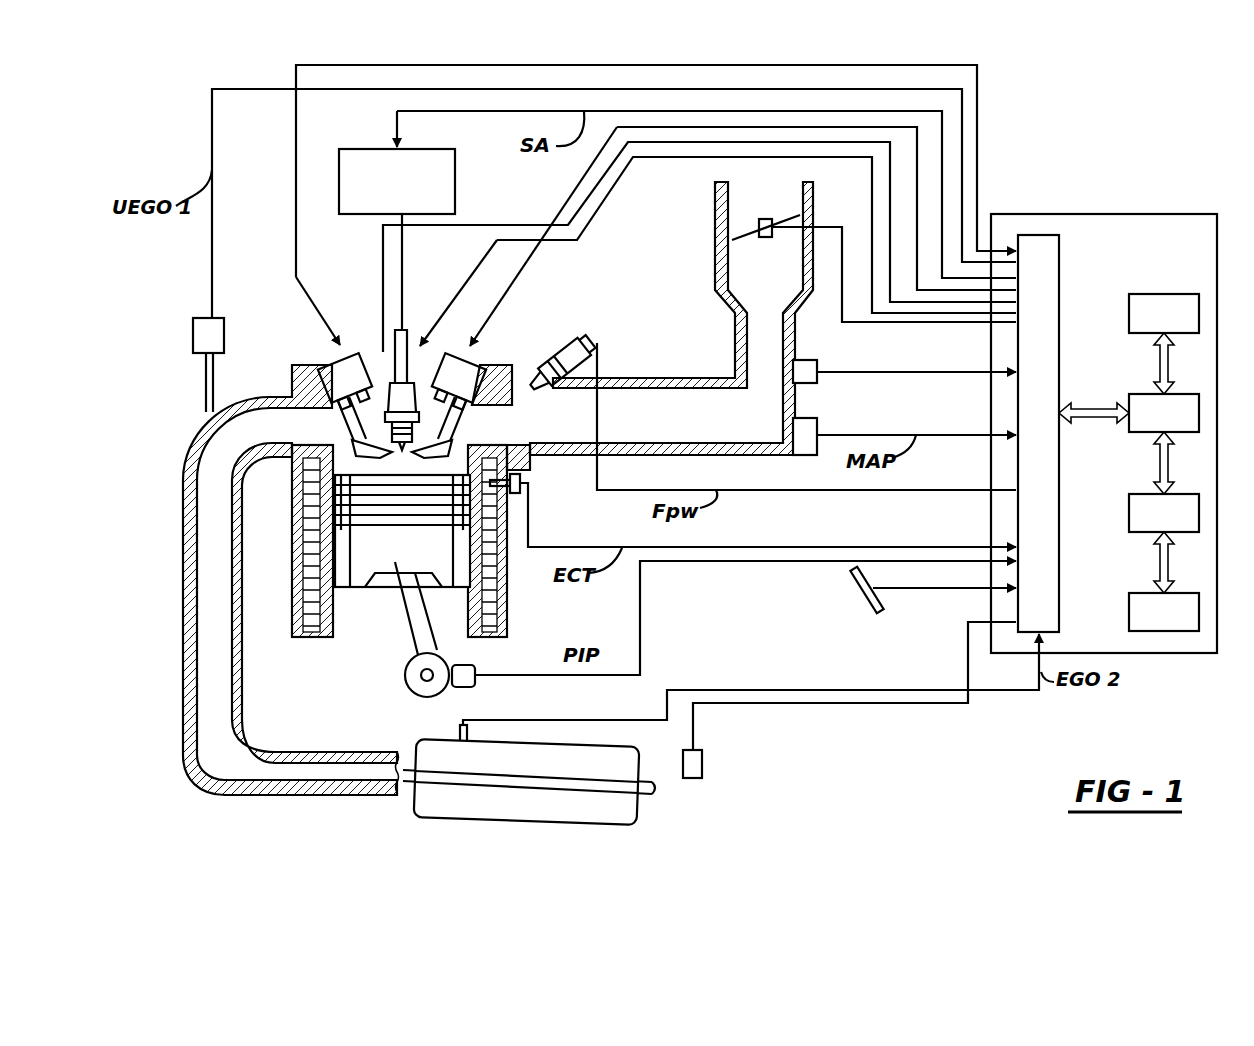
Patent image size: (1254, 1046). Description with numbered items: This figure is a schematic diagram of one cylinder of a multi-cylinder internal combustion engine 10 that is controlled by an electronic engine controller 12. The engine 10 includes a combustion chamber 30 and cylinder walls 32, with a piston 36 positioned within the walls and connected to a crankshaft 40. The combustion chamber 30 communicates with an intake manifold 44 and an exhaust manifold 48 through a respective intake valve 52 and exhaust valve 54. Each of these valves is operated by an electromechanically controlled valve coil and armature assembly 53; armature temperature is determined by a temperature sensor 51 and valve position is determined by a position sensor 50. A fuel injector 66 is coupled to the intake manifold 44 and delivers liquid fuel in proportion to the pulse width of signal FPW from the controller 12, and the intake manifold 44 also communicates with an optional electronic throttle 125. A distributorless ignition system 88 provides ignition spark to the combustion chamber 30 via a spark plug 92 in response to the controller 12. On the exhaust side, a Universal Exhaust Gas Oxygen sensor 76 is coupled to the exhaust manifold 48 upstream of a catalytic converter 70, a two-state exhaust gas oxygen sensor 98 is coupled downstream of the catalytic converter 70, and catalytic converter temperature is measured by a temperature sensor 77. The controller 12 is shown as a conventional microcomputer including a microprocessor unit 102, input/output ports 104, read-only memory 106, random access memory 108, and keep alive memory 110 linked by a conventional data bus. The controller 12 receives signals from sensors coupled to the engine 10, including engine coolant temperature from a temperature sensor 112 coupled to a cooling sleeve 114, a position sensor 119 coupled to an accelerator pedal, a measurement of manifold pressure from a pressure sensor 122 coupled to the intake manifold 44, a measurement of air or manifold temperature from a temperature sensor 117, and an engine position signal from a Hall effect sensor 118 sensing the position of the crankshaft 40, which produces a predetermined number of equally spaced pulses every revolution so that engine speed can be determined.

The internal combustion engine 10 is at (290, 362).
The electronic engine controller 12 is at (1104, 401).
The combustion chamber 30 is at (400, 462).
The cylinder walls 32 is at (378, 567).
The piston 36 is at (396, 565).
The crankshaft 40 is at (405, 678).
The intake manifold 44 is at (728, 428).
The exhaust manifold 48 is at (212, 486).
The position sensor 50 is at (370, 347).
The temperature sensor 51 is at (438, 346).
The intake valve 52 is at (456, 440).
The valve coil and armature assembly 53 is at (345, 348).
The exhaust valve 54 is at (352, 438).
The fuel injector 66 is at (552, 346).
The catalytic converter 70 is at (486, 826).
The Universal Exhaust Gas Oxygen sensor 76 is at (194, 332).
The temperature sensor 77 is at (458, 750).
The distributorless ignition system 88 is at (456, 186).
The spark plug 92 is at (404, 352).
The two-state exhaust gas oxygen sensor 98 is at (712, 754).
The microprocessor unit 102 is at (1141, 394).
The input/output ports 104 is at (1062, 256).
The read-only memory 106 is at (1166, 294).
The random access memory 108 is at (1141, 494).
The keep alive memory 110 is at (1141, 593).
The temperature sensor 112 is at (521, 478).
The cooling sleeve 114 is at (324, 623).
The temperature sensor 117 is at (814, 368).
The Hall effect sensor 118 is at (466, 688).
The position sensor 119 is at (855, 604).
The pressure sensor 122 is at (820, 428).
The electronic throttle 125 is at (756, 224).